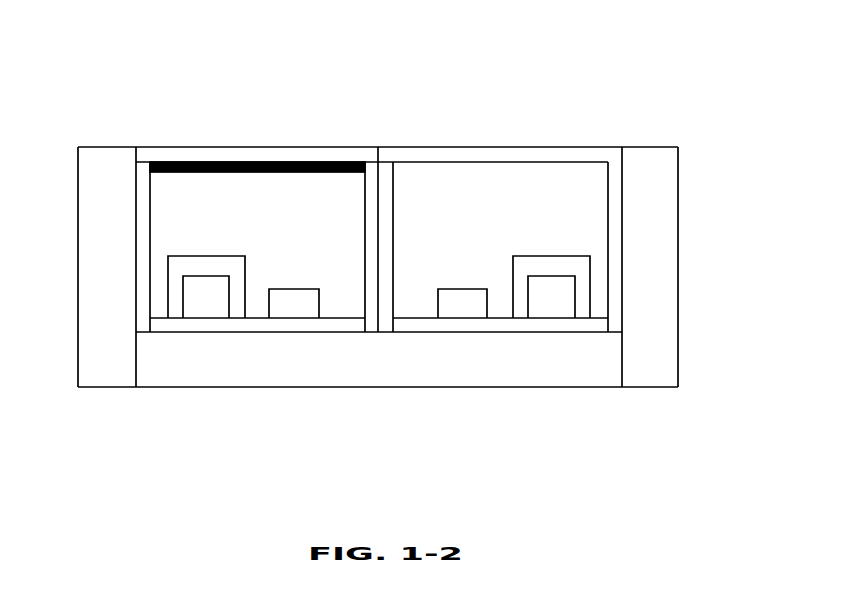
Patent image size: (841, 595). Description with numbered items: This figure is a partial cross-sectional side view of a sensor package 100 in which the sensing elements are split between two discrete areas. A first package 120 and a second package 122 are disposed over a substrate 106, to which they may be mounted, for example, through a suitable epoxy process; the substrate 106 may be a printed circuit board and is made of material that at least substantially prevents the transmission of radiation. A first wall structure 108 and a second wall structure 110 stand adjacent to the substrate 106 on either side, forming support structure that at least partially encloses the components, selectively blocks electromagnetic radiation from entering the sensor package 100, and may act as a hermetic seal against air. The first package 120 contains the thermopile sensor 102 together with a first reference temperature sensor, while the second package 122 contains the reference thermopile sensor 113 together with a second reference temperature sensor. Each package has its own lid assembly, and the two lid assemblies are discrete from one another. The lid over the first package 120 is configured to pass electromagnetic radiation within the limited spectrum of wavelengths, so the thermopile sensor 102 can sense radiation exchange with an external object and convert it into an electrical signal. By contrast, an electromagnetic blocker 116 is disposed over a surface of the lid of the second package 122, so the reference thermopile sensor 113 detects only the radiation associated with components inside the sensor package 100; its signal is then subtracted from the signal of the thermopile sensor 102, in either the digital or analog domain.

The sensor package 100 is at (600, 50).
The thermopile sensor 102 is at (520, 307).
The substrate 106 is at (380, 378).
The first wall structure 108 is at (97, 265).
The second wall structure 110 is at (660, 262).
The reference thermopile sensor 113 is at (235, 307).
The electromagnetic blocker 116 is at (267, 160).
The first package 120 is at (560, 188).
The second package 122 is at (308, 190).